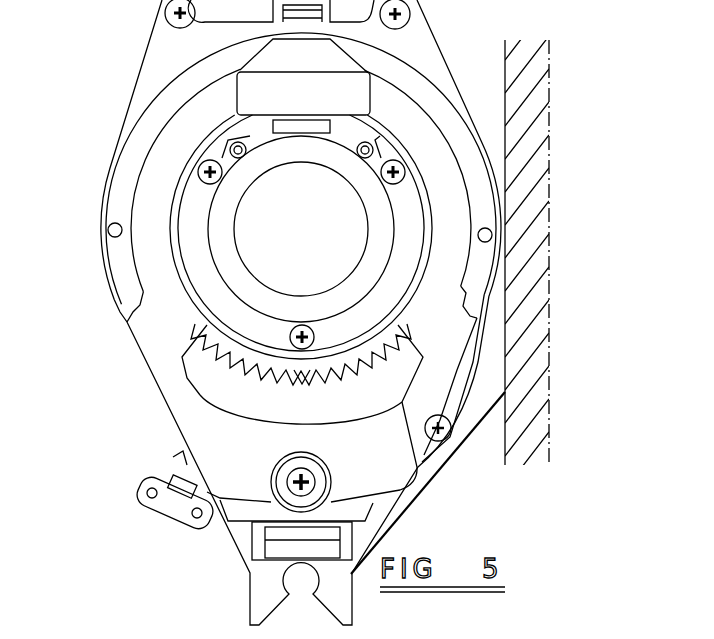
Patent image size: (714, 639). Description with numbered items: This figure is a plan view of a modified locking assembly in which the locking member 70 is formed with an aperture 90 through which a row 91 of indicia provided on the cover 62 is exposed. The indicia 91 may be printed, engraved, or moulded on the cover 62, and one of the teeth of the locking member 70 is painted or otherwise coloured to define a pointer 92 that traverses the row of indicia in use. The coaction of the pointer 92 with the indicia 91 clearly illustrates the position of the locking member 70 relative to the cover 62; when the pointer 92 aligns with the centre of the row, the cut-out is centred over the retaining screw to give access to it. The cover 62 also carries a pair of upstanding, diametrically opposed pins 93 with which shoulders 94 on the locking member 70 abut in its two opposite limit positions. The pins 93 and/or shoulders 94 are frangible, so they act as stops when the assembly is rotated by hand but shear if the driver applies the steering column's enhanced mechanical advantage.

The locking member 70 is at (163, 329).
The pins 93 is at (110, 229).
The shoulders 94 is at (127, 314).
The aperture 90 is at (197, 391).
The row of indicia 91 is at (205, 412).
The pointer 92 is at (300, 372).
The cover 62 is at (386, 392).